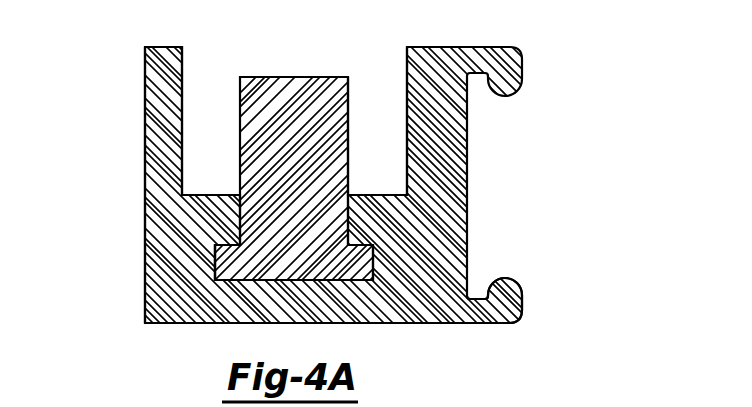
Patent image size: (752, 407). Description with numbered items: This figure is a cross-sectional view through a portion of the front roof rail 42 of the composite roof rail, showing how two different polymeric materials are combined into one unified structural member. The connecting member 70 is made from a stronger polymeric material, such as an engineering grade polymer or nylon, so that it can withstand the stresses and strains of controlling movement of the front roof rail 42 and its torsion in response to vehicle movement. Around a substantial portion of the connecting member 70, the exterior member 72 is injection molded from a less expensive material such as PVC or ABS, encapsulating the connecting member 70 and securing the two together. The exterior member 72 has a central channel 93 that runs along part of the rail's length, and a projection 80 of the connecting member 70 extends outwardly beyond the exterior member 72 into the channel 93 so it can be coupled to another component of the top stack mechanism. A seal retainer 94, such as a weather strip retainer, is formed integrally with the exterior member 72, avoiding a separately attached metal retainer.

The front roof rail 42 is at (80, 152).
The projection 80 is at (311, 90).
The central channel 93 is at (378, 126).
The exterior member 72 is at (156, 303).
The connecting member 70 is at (239, 265).
The seal retainer 94 is at (515, 320).